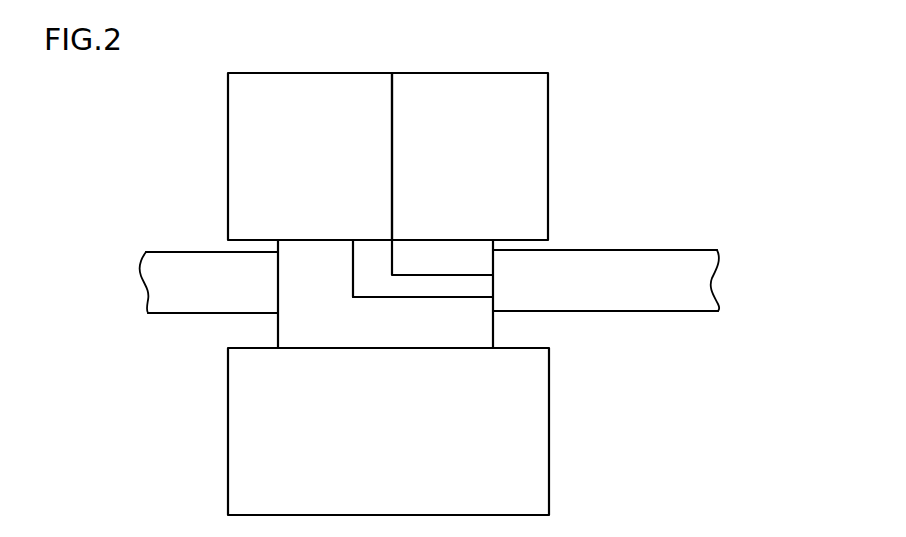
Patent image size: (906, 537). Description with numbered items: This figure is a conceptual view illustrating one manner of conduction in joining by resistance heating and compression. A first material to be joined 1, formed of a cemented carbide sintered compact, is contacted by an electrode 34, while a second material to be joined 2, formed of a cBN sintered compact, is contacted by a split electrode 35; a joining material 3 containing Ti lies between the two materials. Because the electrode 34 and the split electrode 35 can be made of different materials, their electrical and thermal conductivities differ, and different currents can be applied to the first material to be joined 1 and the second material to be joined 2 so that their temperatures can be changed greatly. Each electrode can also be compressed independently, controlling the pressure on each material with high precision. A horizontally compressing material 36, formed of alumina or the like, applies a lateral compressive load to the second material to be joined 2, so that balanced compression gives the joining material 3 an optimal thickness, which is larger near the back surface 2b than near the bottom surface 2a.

The first material to be joined 1 is at (305, 284).
The second material to be joined 2 is at (450, 250).
The bottom surface 2a is at (438, 278).
The back surface 2b is at (390, 263).
The joining material 3 is at (477, 286).
The electrode 34 is at (248, 133).
The split electrode 35 is at (525, 153).
The horizontally compressing material 36 is at (187, 268).